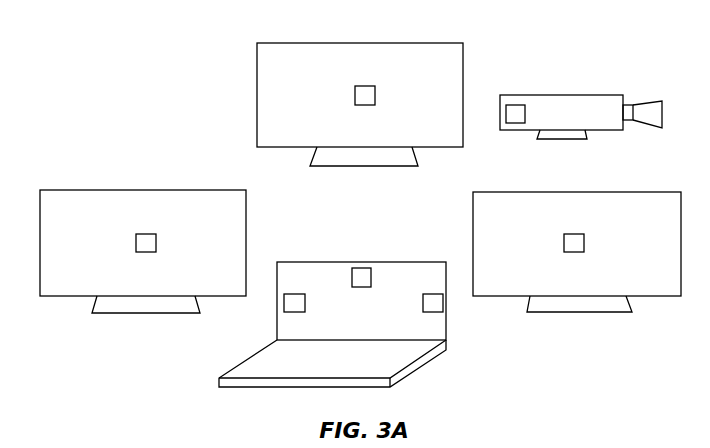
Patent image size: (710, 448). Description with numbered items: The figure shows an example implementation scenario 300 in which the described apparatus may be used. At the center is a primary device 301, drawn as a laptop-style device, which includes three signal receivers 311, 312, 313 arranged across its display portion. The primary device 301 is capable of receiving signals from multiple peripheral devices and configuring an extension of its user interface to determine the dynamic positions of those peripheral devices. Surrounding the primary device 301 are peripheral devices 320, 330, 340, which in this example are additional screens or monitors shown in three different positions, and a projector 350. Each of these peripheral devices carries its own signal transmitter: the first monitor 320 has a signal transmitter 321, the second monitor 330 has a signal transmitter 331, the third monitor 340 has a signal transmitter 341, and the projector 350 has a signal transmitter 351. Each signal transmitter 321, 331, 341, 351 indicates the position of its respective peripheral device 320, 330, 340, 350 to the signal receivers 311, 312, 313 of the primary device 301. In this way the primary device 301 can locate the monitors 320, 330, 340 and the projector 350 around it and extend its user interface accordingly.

The scenario 300 is at (161, 91).
The primary device 301 is at (219, 388).
The signal receiver 311 is at (283, 307).
The signal receiver 312 is at (363, 287).
The signal receiver 313 is at (443, 302).
The peripheral device 320 is at (64, 190).
The signal transmitter 321 is at (145, 234).
The peripheral device 330 is at (319, 43).
The signal transmitter 331 is at (377, 87).
The peripheral device 340 is at (525, 297).
The signal transmitter 341 is at (585, 243).
The projector 350 is at (589, 95).
The signal transmitter 351 is at (512, 105).